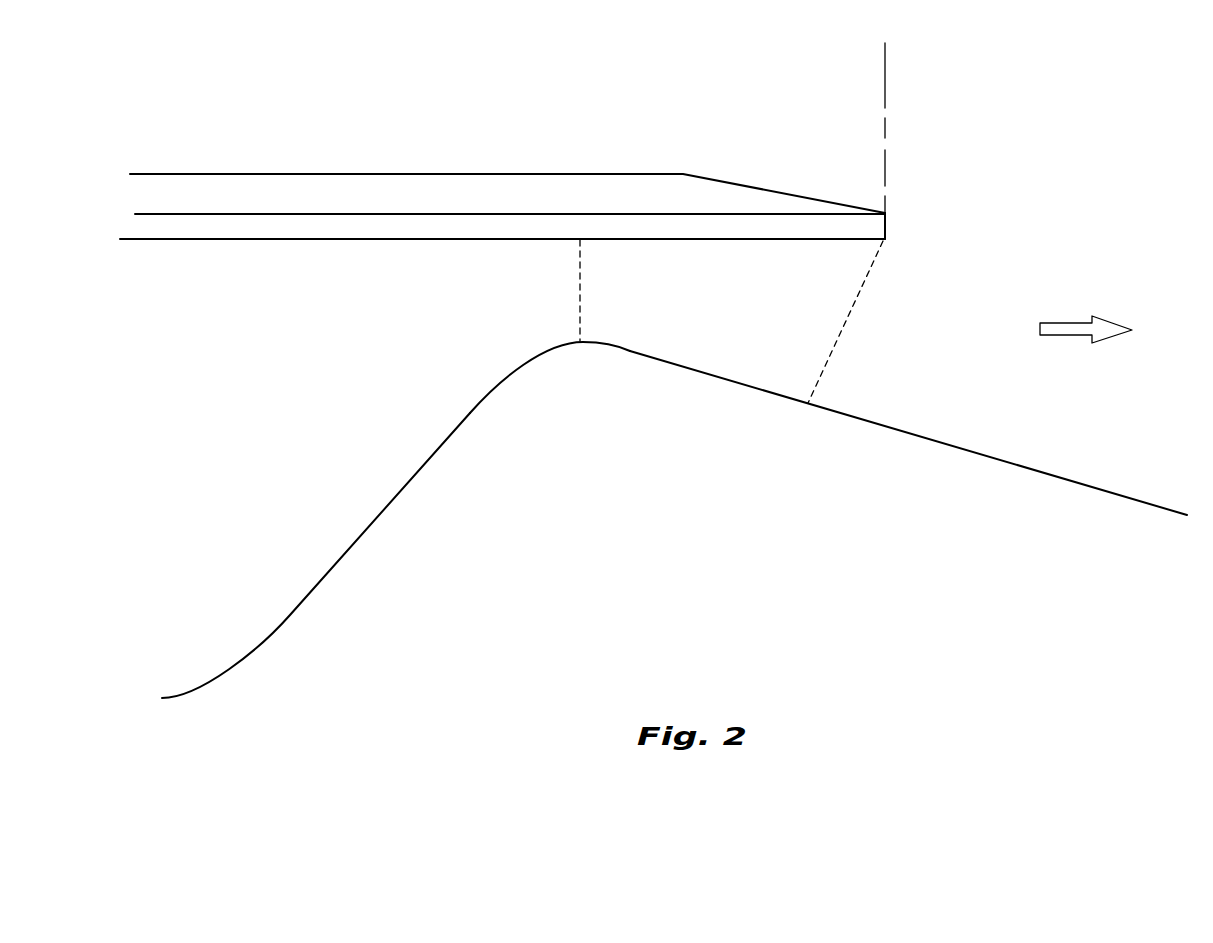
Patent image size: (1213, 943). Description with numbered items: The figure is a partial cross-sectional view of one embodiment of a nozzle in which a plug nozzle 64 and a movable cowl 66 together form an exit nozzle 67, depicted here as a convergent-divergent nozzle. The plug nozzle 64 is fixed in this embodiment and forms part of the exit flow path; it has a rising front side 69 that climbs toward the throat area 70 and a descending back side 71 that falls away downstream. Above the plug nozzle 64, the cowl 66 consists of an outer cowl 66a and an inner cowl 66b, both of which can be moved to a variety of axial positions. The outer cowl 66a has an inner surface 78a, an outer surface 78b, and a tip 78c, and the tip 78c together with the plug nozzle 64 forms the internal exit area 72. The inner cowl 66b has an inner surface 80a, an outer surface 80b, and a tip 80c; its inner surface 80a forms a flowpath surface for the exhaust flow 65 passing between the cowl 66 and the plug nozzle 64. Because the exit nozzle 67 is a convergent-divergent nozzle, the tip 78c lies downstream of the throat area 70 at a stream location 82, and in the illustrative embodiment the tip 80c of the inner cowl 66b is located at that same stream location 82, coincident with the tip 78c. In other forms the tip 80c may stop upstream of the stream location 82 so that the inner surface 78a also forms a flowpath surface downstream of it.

The plug nozzle 64 is at (674, 469).
The exhaust flow 65 is at (1068, 320).
The movable cowl 66 is at (542, 177).
The outer cowl 66a is at (507, 161).
The inner cowl 66b is at (502, 264).
The exit nozzle 67 is at (984, 79).
The rising front side 69 is at (433, 455).
The throat area 70 is at (578, 293).
The descending back side 71 is at (972, 452).
The internal exit area 72 is at (835, 342).
The inner surface 78a is at (401, 214).
The outer surface 78b is at (460, 174).
The tip 78c is at (885, 214).
The inner surface 80a is at (360, 239).
The outer surface 80b is at (455, 215).
The tip 80c is at (885, 230).
The stream location 82 is at (885, 78).